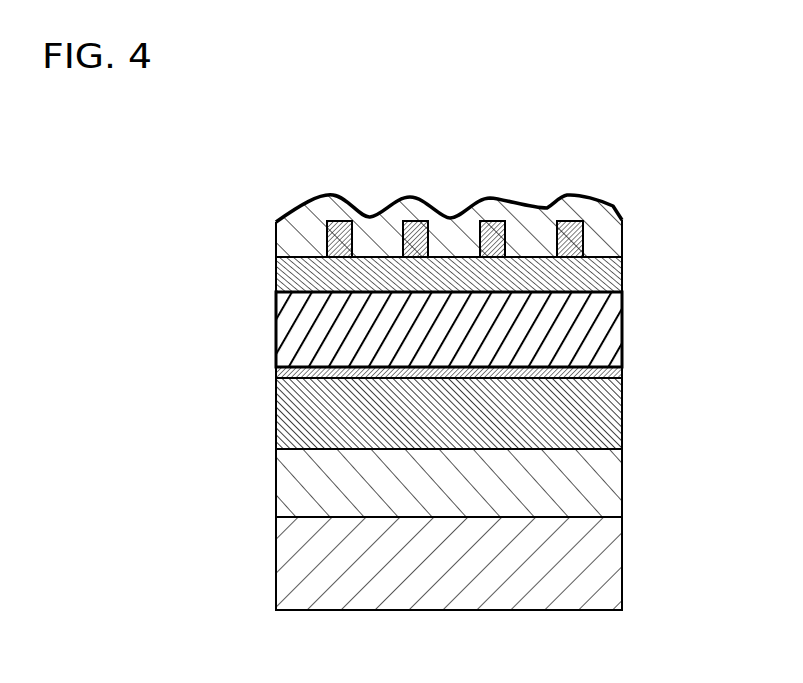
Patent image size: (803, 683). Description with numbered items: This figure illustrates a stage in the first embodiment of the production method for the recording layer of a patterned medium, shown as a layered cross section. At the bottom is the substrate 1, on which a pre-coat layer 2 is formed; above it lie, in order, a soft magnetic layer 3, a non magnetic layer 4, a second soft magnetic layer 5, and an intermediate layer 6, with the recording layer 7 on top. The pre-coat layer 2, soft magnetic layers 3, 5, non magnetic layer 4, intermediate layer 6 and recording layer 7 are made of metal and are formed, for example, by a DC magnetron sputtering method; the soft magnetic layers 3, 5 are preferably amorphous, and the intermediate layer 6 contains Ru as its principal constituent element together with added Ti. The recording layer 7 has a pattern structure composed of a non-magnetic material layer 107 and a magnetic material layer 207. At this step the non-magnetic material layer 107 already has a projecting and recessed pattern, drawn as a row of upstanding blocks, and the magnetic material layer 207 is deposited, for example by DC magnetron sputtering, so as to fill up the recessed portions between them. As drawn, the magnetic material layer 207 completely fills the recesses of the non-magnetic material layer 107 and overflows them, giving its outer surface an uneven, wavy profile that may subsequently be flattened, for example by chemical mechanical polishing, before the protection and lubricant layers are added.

The substrate 1 is at (622, 562).
The pre-coat layer 2 is at (622, 487).
The soft magnetic layer 3 is at (622, 425).
The non magnetic layer 4 is at (622, 373).
The soft magnetic layer 5 is at (622, 328).
The intermediate layer 6 is at (622, 278).
The recording layer 7 is at (493, 193).
The non-magnetic material layer 107 is at (341, 221).
The magnetic material layer 207 is at (522, 211).